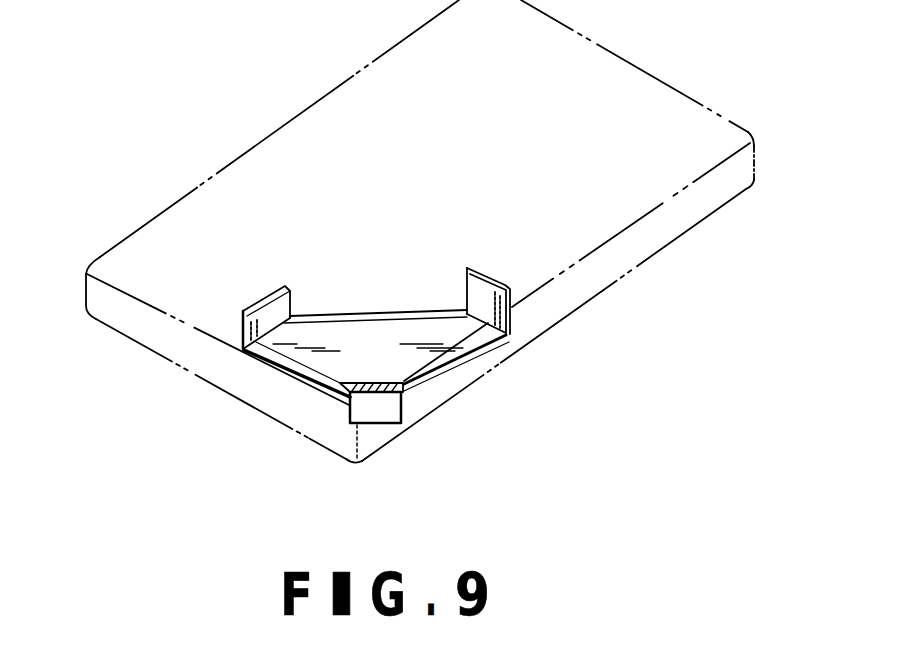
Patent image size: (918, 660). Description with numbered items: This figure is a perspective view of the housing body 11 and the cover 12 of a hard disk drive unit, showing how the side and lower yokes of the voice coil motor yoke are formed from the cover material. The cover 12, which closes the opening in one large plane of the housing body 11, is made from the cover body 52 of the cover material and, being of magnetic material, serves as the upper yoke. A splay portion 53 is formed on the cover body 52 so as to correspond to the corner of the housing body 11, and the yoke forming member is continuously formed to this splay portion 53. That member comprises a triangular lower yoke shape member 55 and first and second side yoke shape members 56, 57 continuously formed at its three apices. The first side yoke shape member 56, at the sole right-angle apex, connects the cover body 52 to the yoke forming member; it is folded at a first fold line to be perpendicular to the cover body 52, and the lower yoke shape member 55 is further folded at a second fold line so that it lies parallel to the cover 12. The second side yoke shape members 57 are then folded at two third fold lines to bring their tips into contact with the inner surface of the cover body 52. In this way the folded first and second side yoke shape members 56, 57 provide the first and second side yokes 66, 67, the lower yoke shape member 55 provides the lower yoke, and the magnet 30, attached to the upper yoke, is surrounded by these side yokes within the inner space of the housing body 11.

The housing body 11 is at (97, 292).
The cover 12 is at (128, 247).
The magnet 30 is at (388, 365).
The cover body 52 is at (542, 289).
The splay portion 53 is at (338, 402).
The lower yoke shape member 55 is at (368, 315).
The first side yoke shape member 56 is at (432, 442).
The second side yoke shape member 57 is at (403, 281).
The first side yoke 66 is at (380, 408).
The second side yoke 67 is at (288, 304).